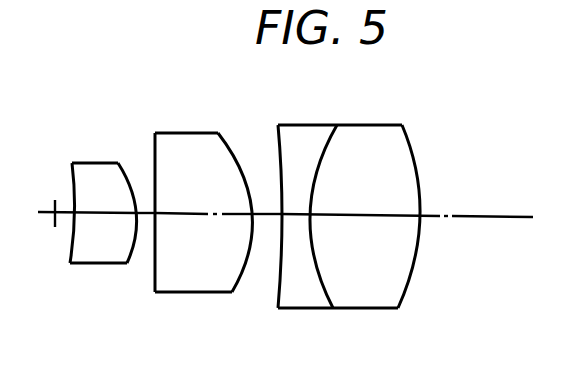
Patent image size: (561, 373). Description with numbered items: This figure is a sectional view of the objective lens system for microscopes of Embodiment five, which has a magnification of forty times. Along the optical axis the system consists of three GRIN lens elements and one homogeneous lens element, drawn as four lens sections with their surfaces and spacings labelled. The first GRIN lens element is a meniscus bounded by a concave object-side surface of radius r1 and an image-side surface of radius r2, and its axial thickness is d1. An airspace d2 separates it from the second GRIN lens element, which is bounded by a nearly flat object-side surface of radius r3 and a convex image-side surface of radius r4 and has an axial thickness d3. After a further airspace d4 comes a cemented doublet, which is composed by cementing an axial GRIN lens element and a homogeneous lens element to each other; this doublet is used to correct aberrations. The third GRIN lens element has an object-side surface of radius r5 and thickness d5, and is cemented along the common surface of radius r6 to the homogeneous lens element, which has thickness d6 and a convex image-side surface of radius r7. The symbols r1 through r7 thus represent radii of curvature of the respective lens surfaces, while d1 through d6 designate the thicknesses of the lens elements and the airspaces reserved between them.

The radius of curvature of first lens surface r1 is at (68, 180).
The radius of curvature of second lens surface r2 is at (133, 185).
The radius of curvature of third lens surface r3 is at (155, 178).
The radius of curvature of fourth lens surface r4 is at (250, 167).
The radius of curvature of fifth lens surface r5 is at (280, 172).
The radius of curvature of sixth lens surface r6 is at (320, 166).
The radius of curvature of seventh lens surface r7 is at (414, 160).
The thickness of first lens element d1 is at (92, 213).
The airspace between first and second lens elements d2 is at (145, 214).
The thickness of second lens element d3 is at (193, 219).
The airspace between second lens element and cemented doublet d4 is at (258, 214).
The thickness of third lens element d5 is at (296, 218).
The thickness of fourth lens element d6 is at (379, 218).